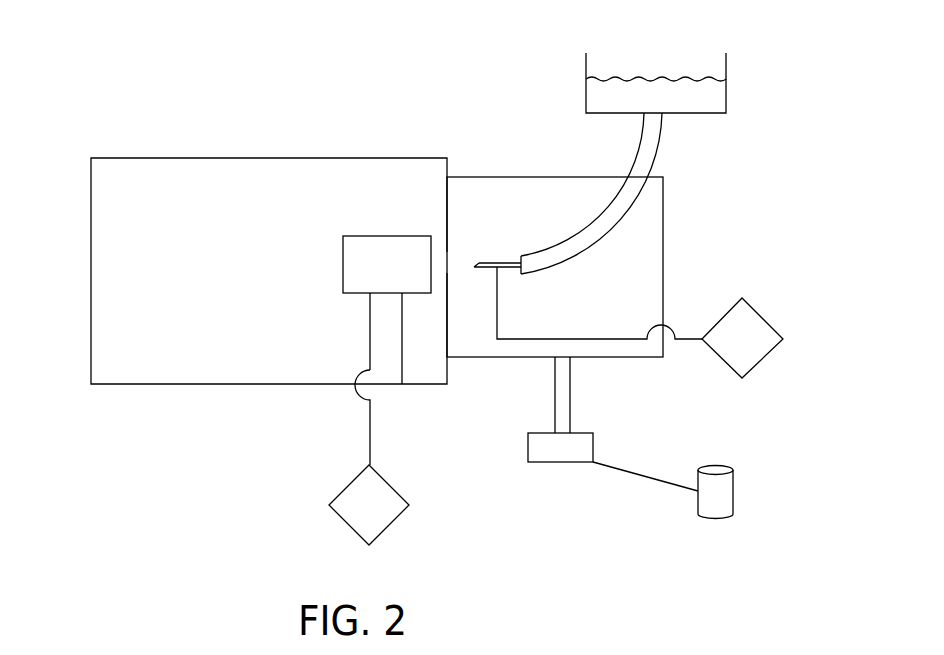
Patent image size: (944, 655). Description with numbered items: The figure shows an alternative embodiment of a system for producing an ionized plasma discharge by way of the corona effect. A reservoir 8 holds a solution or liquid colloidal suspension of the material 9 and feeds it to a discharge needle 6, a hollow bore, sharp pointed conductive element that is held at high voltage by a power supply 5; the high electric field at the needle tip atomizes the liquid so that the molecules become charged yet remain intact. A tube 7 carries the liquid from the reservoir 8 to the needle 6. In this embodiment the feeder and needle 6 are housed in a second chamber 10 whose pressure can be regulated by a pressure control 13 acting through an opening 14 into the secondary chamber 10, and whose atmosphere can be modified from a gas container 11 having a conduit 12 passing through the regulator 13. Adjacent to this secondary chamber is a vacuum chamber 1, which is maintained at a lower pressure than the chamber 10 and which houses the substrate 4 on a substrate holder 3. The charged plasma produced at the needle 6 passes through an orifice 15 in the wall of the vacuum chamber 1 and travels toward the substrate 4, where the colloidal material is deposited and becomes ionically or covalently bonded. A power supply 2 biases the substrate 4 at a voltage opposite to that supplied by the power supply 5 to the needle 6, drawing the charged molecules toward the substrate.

The vacuum chamber 1 is at (222, 385).
The power supply 2 is at (383, 488).
The substrate holder 3 is at (405, 350).
The substrate 4 is at (338, 263).
The power supply 5 is at (735, 318).
The discharge needle 6 is at (494, 258).
The supply tube 7 is at (660, 153).
The reservoir 8 is at (565, 87).
The liquid colloidal suspension 9 is at (634, 59).
The second chamber 10 is at (672, 256).
The gas container 11 is at (735, 490).
The conduit 12 is at (643, 473).
The pressure control 13 is at (550, 463).
The opening 14 is at (573, 404).
The orifice 15 is at (455, 263).